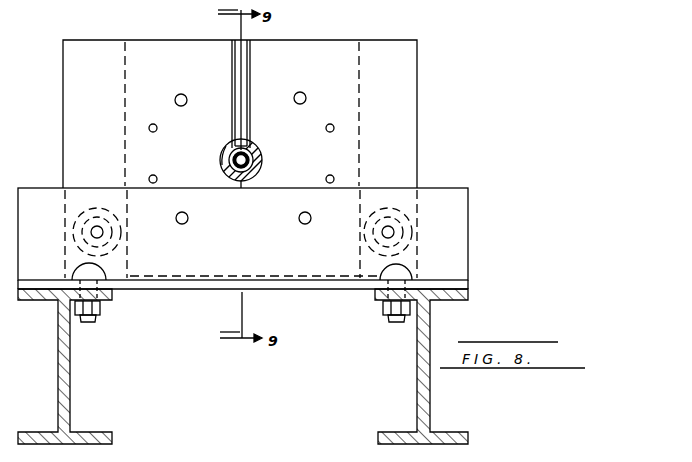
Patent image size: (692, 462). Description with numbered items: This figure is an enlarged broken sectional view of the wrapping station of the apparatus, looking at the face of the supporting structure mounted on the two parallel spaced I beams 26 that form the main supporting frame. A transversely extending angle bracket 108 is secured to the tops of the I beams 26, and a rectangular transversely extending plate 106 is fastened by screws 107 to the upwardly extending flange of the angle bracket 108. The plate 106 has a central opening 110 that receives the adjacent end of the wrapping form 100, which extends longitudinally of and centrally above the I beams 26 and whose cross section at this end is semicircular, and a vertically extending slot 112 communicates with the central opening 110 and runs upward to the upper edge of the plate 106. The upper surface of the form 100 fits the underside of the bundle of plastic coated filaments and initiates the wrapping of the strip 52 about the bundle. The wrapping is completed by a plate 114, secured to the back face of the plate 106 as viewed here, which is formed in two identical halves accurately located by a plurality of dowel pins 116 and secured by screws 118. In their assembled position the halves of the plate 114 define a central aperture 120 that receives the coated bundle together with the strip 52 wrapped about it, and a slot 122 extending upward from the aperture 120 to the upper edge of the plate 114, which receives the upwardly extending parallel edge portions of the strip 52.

The I beams 26 is at (60, 389).
The strip 52 is at (250, 143).
The wrapping form 100 is at (262, 171).
The transversely extending plate 106 is at (407, 93).
The screws 107 is at (105, 232).
The angle bracket 108 is at (456, 218).
The central opening 110 is at (258, 153).
The slot 112 is at (249, 69).
The plate 114 is at (362, 73).
The dowel pins 116 is at (153, 132).
The screws 118 is at (181, 94).
The central aperture 120 is at (231, 150).
The slot 122 is at (243, 58).